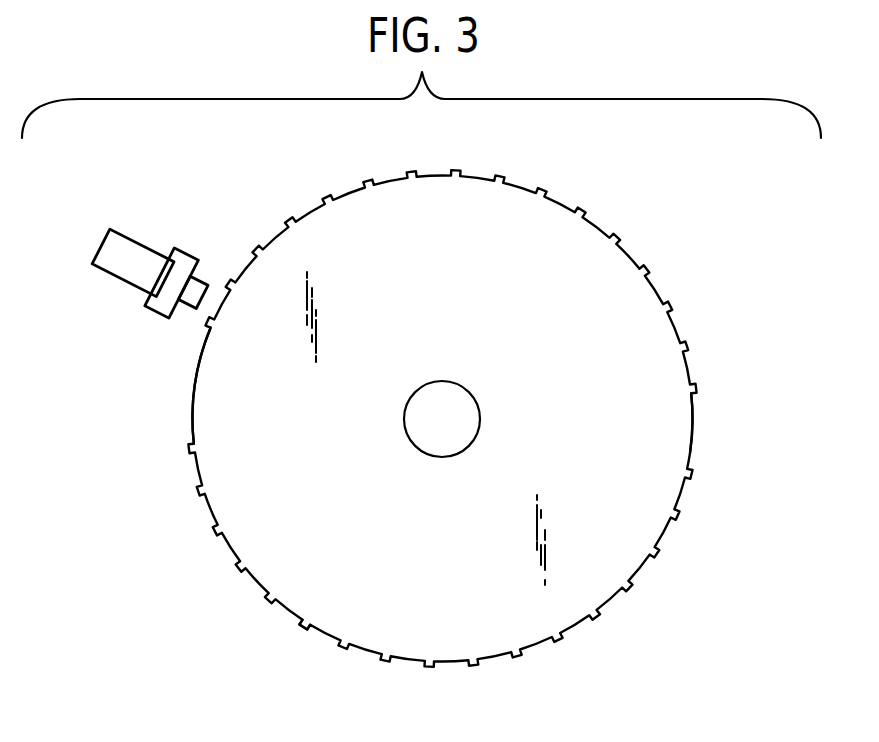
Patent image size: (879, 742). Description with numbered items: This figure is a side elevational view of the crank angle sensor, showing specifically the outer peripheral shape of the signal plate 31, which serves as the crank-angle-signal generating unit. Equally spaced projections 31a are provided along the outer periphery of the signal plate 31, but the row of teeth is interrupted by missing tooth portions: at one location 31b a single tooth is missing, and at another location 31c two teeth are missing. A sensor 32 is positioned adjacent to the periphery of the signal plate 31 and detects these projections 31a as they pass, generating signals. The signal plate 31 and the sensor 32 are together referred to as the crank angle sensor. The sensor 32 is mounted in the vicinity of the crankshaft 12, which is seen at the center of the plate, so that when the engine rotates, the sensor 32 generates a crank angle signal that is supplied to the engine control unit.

The crankshaft 12 is at (480, 419).
The signal plate 31 is at (226, 552).
The projections 31a is at (301, 625).
The missing tooth portion 31b is at (695, 437).
The missing tooth portion 31c is at (193, 408).
The sensor 32 is at (118, 281).